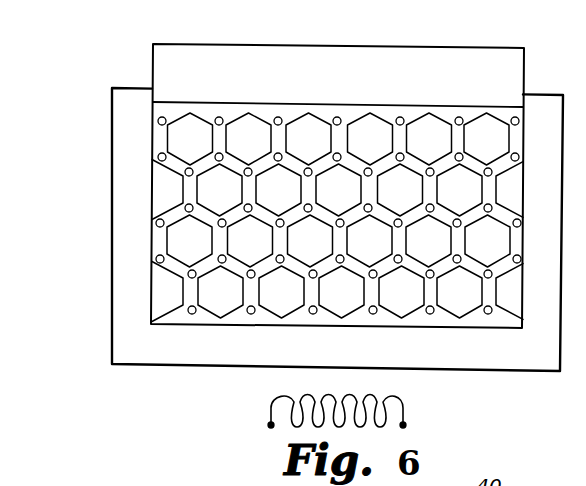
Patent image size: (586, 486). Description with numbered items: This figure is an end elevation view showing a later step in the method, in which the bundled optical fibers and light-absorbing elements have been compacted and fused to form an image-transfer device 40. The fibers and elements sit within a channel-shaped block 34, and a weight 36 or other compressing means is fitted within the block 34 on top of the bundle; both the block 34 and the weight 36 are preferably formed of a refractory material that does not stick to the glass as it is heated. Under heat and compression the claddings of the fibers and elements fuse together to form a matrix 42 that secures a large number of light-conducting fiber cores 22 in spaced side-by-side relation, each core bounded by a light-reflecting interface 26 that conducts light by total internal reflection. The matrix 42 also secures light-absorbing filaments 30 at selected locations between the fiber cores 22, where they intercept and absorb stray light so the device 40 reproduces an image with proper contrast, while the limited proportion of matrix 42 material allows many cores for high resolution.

The light-conducting fiber core 22 is at (425, 133).
The light-reflecting interface 26 is at (205, 125).
The light-absorbing filament 30 is at (403, 118).
The channel-shaped block 34 is at (128, 145).
The weight 36 is at (172, 62).
The image-transfer device 40 is at (270, 112).
The matrix 42 is at (352, 115).